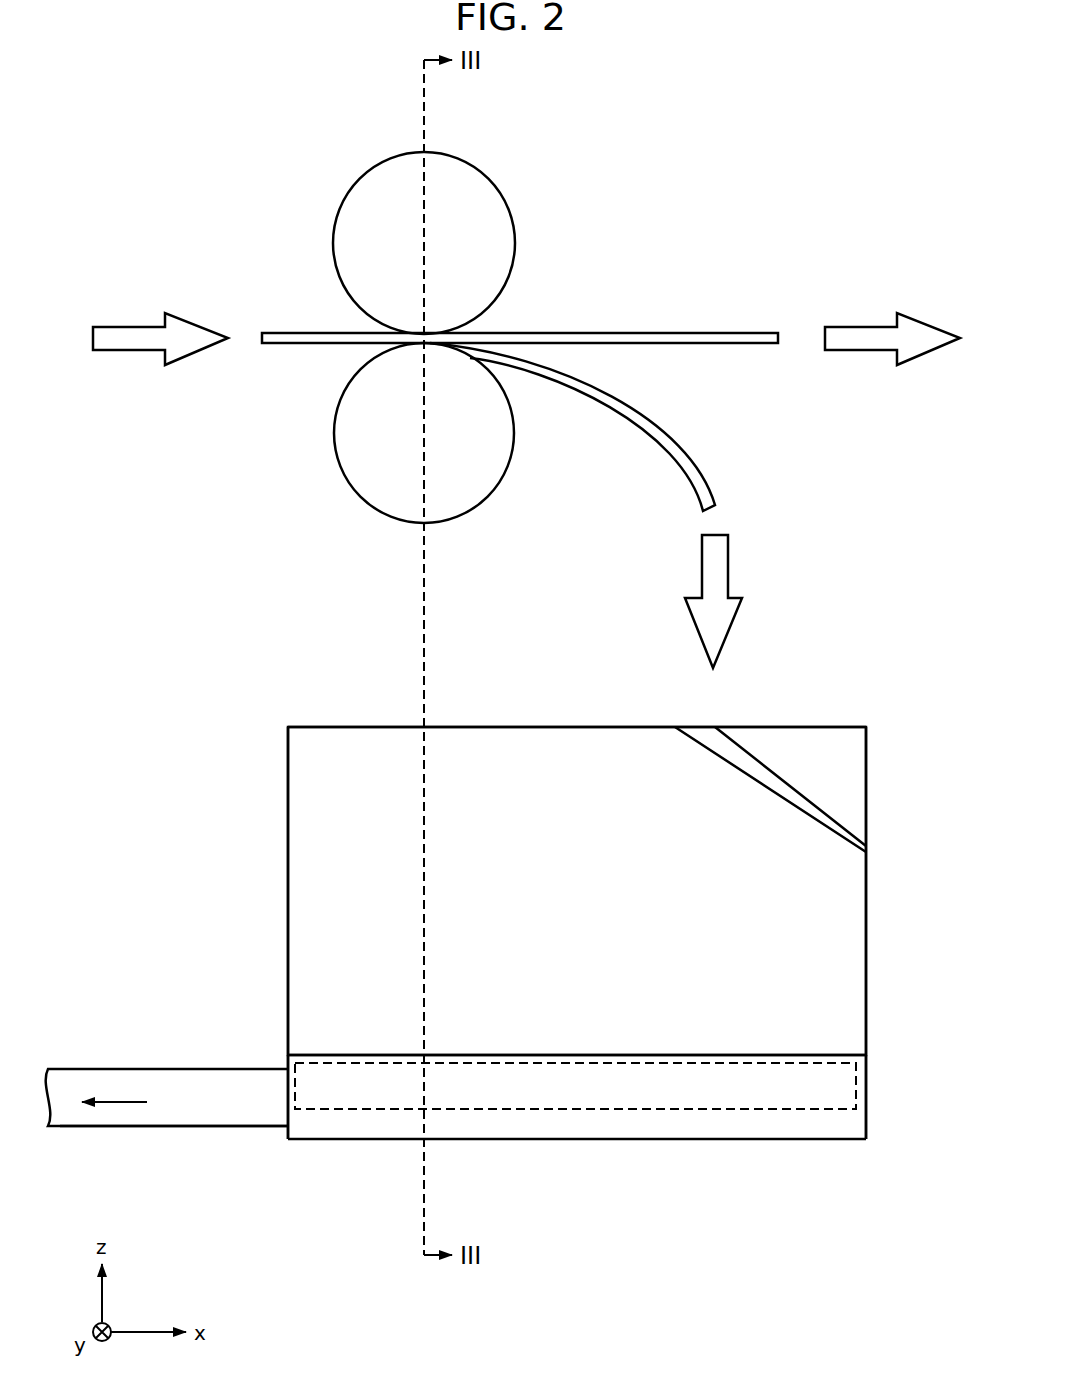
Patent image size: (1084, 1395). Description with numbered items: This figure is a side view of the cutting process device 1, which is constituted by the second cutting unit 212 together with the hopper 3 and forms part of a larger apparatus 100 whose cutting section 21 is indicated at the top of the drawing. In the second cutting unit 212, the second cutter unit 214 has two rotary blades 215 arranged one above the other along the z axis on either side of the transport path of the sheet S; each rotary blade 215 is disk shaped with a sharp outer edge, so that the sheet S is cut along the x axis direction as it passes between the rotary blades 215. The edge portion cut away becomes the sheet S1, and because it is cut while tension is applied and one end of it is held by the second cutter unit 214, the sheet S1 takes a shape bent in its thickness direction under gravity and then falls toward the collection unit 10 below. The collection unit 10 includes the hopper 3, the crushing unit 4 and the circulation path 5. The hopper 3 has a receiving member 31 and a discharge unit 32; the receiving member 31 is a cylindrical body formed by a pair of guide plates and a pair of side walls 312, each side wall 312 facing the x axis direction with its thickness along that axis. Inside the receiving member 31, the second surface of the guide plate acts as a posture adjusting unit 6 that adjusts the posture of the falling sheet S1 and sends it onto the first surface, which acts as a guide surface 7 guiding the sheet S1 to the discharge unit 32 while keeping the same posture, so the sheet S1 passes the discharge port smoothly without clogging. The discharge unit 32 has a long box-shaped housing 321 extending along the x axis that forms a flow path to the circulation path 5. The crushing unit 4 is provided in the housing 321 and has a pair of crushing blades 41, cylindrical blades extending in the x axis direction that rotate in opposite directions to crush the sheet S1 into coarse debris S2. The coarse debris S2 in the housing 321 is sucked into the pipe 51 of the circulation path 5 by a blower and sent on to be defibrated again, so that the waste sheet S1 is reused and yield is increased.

The cutting process device 1 is at (917, 124).
The image forming apparatus 100 is at (771, 78).
The transport unit 21 is at (150, 78).
The second cutting unit 212 is at (315, 105).
The second cutter unit 214 is at (345, 197).
The rotary blade 215 is at (490, 178).
The sheet S is at (706, 330).
The sheet S1 is at (716, 472).
The coarse debris S2 is at (125, 1102).
The collection unit 10 is at (879, 626).
The hopper 3 is at (787, 686).
The receiving member 31 is at (869, 872).
The side wall 312 is at (866, 786).
The guide surface 7 is at (495, 745).
The posture adjusting unit 6 is at (757, 742).
The discharge unit 32 is at (866, 1082).
The housing 321 is at (790, 1140).
The crushing blade 41 is at (597, 1095).
The crushing unit 4 is at (575, 1134).
The circulation path 5 is at (203, 1132).
The pipe 51 is at (98, 1128).